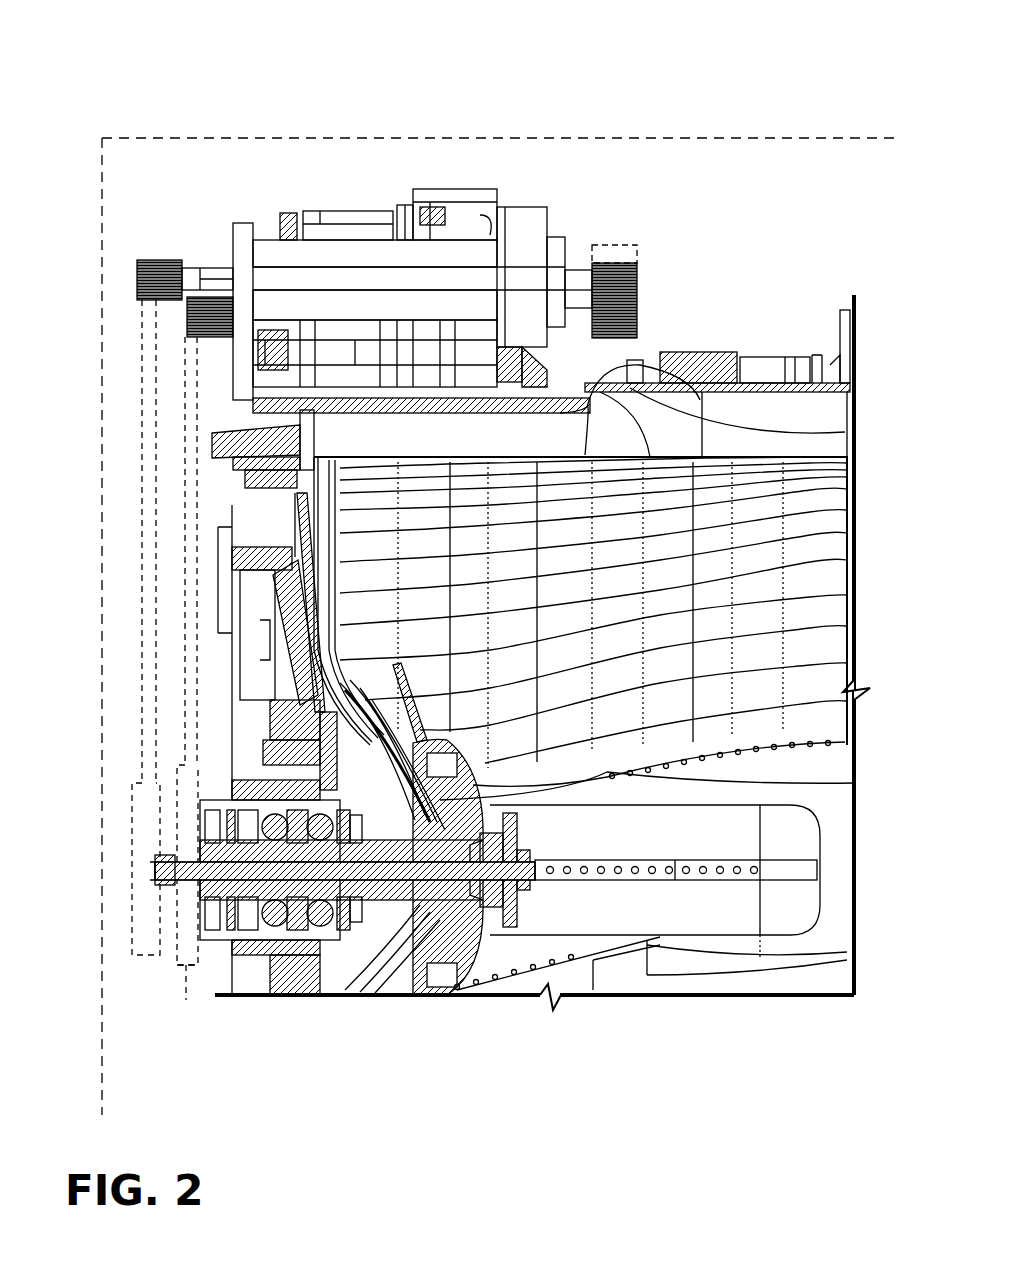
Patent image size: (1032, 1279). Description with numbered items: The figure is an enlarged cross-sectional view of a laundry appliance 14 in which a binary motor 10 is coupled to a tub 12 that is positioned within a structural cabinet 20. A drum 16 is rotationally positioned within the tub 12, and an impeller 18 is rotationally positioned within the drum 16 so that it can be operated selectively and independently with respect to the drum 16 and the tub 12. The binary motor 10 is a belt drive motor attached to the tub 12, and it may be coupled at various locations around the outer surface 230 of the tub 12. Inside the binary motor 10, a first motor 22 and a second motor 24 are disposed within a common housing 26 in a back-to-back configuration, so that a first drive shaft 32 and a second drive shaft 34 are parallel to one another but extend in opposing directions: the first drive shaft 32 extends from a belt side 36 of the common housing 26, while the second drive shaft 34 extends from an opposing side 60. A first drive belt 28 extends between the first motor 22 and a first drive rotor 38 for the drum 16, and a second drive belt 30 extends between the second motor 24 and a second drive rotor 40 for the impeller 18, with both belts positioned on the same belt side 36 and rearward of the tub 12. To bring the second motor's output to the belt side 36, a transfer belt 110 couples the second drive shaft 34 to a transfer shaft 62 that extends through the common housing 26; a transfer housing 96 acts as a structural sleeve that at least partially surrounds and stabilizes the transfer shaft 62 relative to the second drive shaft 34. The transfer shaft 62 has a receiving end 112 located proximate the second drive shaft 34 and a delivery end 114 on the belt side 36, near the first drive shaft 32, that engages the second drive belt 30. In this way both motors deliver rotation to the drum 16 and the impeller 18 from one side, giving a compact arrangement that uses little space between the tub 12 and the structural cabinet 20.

The binary motor 10 is at (375, 196).
The tub 12 is at (752, 350).
The laundry appliance 14 is at (651, 82).
The drum 16 is at (818, 578).
The impeller 18 is at (835, 790).
The structural cabinet 20 is at (732, 138).
The first motor 22 is at (312, 206).
The second motor 24 is at (466, 186).
The common housing 26 is at (415, 186).
The first drive belt 28 is at (185, 517).
The second drive belt 30 is at (142, 632).
The first drive shaft 32 is at (205, 336).
The second drive shaft 34 is at (640, 302).
The belt side 36 is at (218, 229).
The first drive rotor 38 is at (186, 975).
The second drive rotor 40 is at (140, 908).
The opposing side 60 is at (573, 208).
The transfer shaft 62 is at (578, 270).
The transfer housing 96 is at (455, 264).
The transfer belt 110 is at (628, 243).
The receiving end 112 is at (612, 384).
The delivery end 114 is at (142, 262).
The outer surface 230 is at (832, 431).